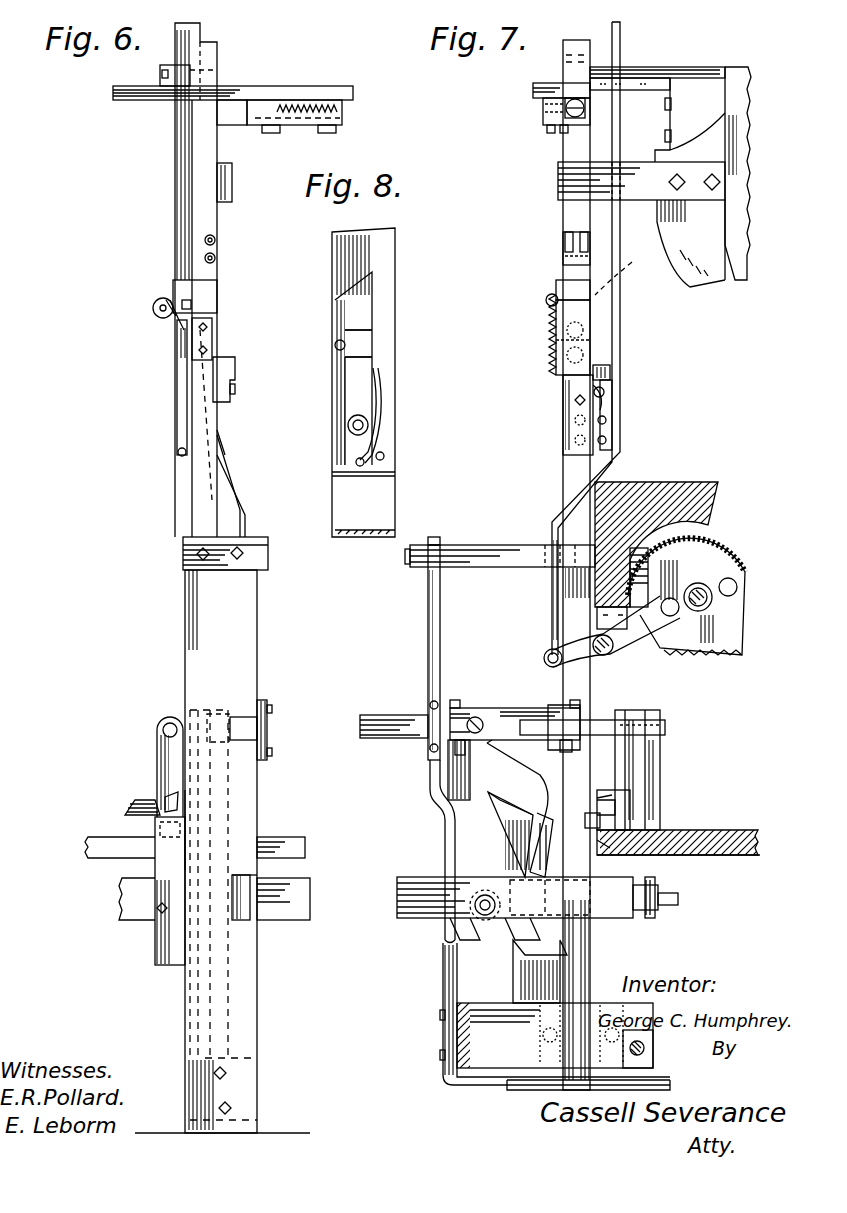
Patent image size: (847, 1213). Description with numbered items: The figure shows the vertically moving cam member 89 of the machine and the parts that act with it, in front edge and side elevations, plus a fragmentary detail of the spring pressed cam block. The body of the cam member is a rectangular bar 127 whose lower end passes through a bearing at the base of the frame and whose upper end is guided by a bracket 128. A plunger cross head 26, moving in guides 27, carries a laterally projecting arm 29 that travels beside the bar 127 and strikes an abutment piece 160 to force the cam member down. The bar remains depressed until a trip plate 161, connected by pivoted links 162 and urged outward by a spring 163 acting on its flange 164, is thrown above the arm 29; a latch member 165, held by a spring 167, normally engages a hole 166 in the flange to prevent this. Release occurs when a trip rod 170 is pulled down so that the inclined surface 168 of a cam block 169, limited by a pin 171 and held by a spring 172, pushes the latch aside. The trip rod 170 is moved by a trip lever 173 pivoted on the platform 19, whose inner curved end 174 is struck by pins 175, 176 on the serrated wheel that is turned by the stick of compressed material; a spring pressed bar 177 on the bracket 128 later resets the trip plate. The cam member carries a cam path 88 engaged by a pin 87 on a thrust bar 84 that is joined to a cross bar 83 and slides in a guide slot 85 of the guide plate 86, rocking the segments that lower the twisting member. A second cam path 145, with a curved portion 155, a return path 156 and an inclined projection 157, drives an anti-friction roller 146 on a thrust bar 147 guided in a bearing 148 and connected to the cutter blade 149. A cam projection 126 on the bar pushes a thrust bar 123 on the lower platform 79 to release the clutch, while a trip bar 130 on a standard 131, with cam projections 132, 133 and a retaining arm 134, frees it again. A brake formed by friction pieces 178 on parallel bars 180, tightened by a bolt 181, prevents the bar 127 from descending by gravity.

In FIG. 7, the platform 19 is at (665, 520).
In FIG. 7, the plunger cross head 26 is at (740, 235).
In FIG. 7, the guides 27 is at (690, 182).
In FIG. 7, the laterally projecting arm 29 is at (641, 181).
In FIG. 6, the platform 79 is at (293, 838).
In FIG. 7, the platform 79 is at (678, 824).
In FIG. 7, the cross bar 83 is at (655, 912).
In FIG. 6, the thrust bar 84 is at (240, 915).
In FIG. 7, the thrust bar 84 is at (515, 898).
In FIG. 6, the guide slot 85 is at (260, 882).
In FIG. 6, the guide plate 86 is at (240, 790).
In FIG. 7, the guide plate 86 is at (445, 846).
In FIG. 7, the laterally projecting pin 87 is at (478, 908).
In FIG. 7, the cam path 88 is at (535, 952).
In FIG. 7, the cam member 89 is at (555, 858).
In FIG. 7, the thrust bar 123 is at (700, 818).
In FIG. 6, the cam projection 126 is at (157, 872).
In FIG. 6, the rectangular bar 127 is at (203, 503).
In FIG. 7, the rectangular bar 127 is at (566, 478).
In FIG. 6, the bracket 128 is at (165, 74).
In FIG. 7, the bracket 128 is at (665, 72).
In FIG. 6, the trip bar 130 is at (165, 775).
In FIG. 7, the trip bar 130 is at (630, 800).
In FIG. 7, the standard 131 is at (640, 770).
In FIG. 6, the inclined cam projection 132 is at (168, 805).
In FIG. 7, the inclined cam projection 132 is at (603, 795).
In FIG. 7, the inclined cam projection 133 is at (589, 823).
In FIG. 6, the lateral projecting arm 134 is at (125, 815).
In FIG. 7, the cam path 145 is at (470, 765).
In FIG. 7, the anti-friction roller 146 is at (474, 716).
In FIG. 6, the thrust bar 147 is at (240, 720).
In FIG. 7, the thrust bar 147 is at (367, 732).
In FIG. 7, the guide bearing 148 is at (430, 705).
In FIG. 7, the cutter blade 149 is at (585, 728).
In FIG. 7, the curved portion 155 is at (490, 838).
In FIG. 7, the return path 156 is at (538, 843).
In FIG. 7, the inclined projection 157 is at (500, 820).
In FIG. 6, the abutment piece 160 is at (237, 369).
In FIG. 7, the abutment piece 160 is at (588, 346).
In FIG. 6, the trip plate 161 is at (215, 283).
In FIG. 7, the trip plate 161 is at (560, 283).
In FIG. 6, the pivoted links 162 is at (216, 250).
In FIG. 7, the pivoted links 162 is at (563, 243).
In FIG. 6, the spring 163 is at (178, 320).
In FIG. 6, the flange 164 is at (160, 298).
In FIG. 7, the flange 164 is at (549, 298).
In FIG. 6, the latch member 165 is at (178, 300).
In FIG. 7, the latch member 165 is at (632, 272).
In FIG. 6, the recess or hole 166 is at (178, 302).
In FIG. 6, the spring 167 is at (186, 413).
In FIG. 7, the spring 167 is at (575, 420).
In FIG. 8, the inclined surface 168 is at (362, 343).
In FIG. 7, the inclined surface 168 is at (605, 380).
In FIG. 8, the cam block 169 is at (360, 368).
In FIG. 7, the cam block 169 is at (612, 391).
In FIG. 6, the trip rod 170 is at (222, 490).
In FIG. 8, the trip rod 170 is at (363, 382).
In FIG. 7, the trip rod 170 is at (623, 318).
In FIG. 8, the pin 171 is at (338, 343).
In FIG. 8, the spring 172 is at (385, 422).
In FIG. 7, the spring 172 is at (612, 430).
In FIG. 7, the trip lever 173 is at (598, 664).
In FIG. 7, the inner curved end 174 is at (668, 598).
In FIG. 7, the projecting pin 175 is at (680, 620).
In FIG. 7, the projecting pin 176 is at (735, 588).
In FIG. 6, the spring pressed bar 177 is at (237, 107).
In FIG. 7, the spring pressed bar 177 is at (590, 112).
In FIG. 7, the friction piece 178 is at (653, 1063).
In FIG. 7, the parallel bars 180 is at (555, 1035).
In FIG. 7, the bolt 181 is at (645, 1048).